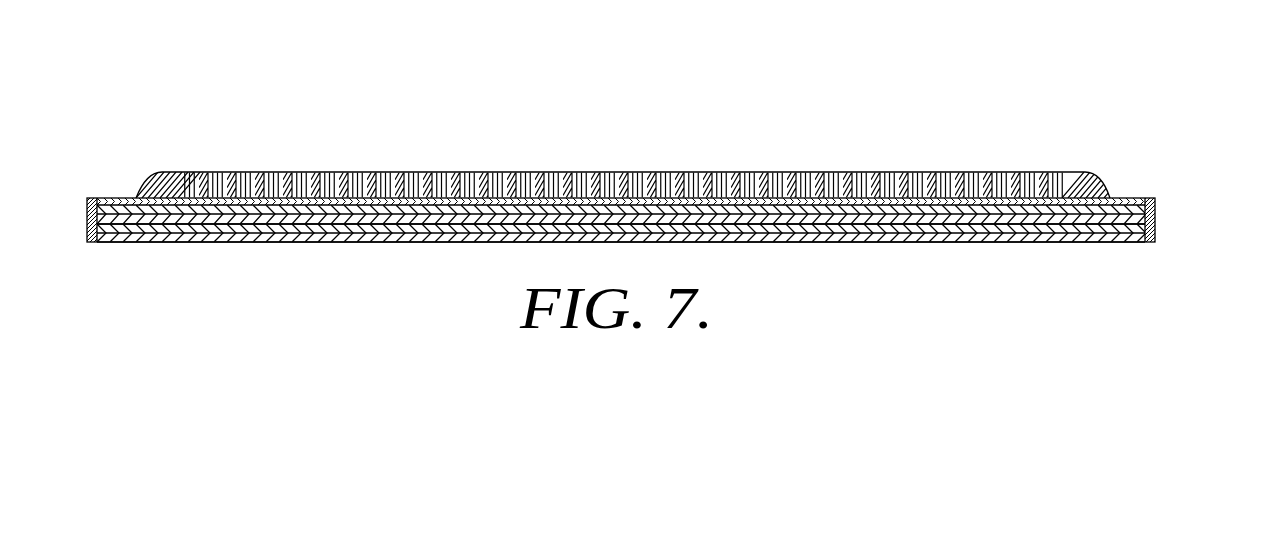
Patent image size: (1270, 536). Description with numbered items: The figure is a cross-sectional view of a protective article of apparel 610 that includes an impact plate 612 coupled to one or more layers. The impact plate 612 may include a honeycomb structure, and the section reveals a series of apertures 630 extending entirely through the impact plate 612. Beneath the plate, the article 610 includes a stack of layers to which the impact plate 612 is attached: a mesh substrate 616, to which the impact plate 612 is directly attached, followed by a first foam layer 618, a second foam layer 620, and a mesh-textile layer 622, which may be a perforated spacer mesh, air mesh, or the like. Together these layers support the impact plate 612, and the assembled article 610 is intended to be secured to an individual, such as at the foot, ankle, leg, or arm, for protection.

The protective article of apparel 610 is at (945, 135).
The impact plate 612 is at (1083, 173).
The mesh substrate 616 is at (1135, 198).
The first foam layer 618 is at (1143, 212).
The second foam layer 620 is at (1101, 226).
The mesh-textile layer 622 is at (1029, 235).
The apertures 630 is at (437, 173).